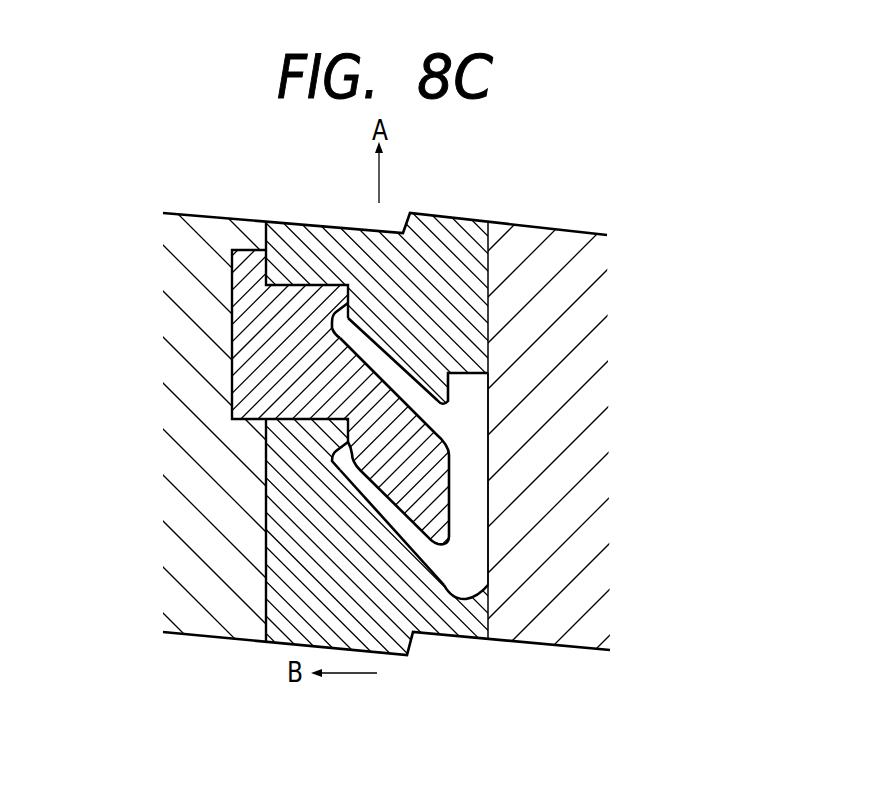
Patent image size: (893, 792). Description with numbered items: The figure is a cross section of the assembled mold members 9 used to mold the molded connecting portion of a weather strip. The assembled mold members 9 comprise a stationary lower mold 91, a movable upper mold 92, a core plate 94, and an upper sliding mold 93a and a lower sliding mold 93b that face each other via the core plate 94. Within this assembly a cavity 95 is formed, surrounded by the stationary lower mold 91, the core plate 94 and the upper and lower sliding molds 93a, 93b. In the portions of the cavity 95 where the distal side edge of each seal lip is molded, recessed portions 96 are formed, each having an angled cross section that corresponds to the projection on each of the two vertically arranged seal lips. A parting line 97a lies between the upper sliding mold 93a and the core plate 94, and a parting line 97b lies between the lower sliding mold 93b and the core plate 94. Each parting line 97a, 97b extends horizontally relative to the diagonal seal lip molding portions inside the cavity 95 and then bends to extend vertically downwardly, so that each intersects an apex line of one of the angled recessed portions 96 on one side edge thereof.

The assembled mold members 9 is at (545, 204).
The stationary lower mold 91 is at (600, 425).
The movable upper mold 92 is at (183, 390).
The upper sliding mold 93a is at (293, 236).
The lower sliding mold 93b is at (290, 542).
The core plate 94 is at (250, 310).
The cavity 95 is at (477, 567).
The recessed portion 96 is at (348, 303).
The parting line 97a is at (348, 286).
The parting line 97b is at (337, 443).